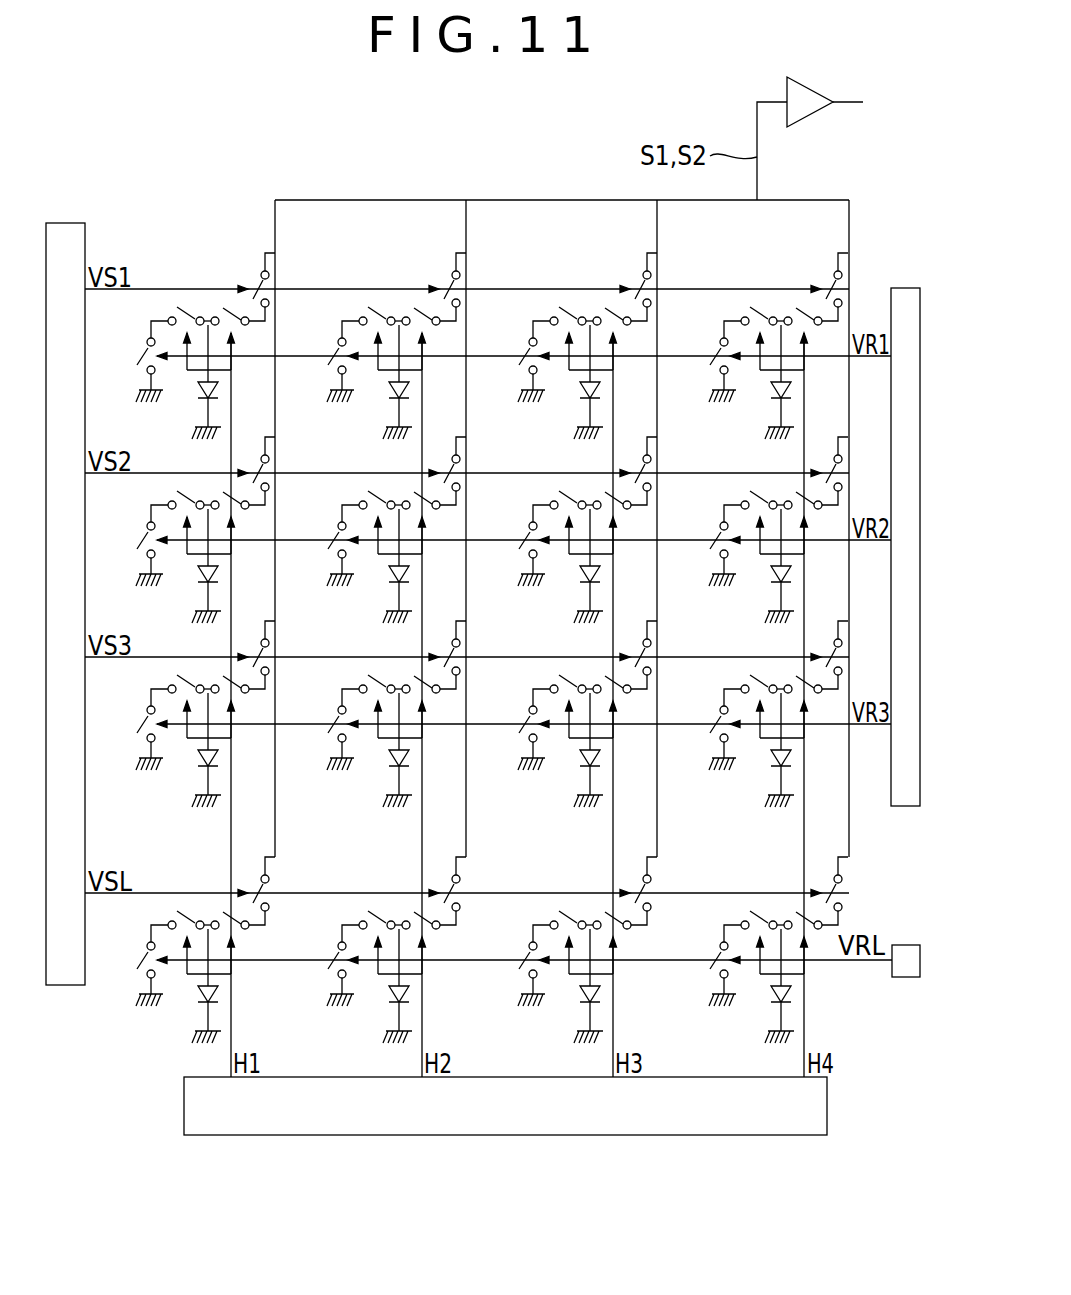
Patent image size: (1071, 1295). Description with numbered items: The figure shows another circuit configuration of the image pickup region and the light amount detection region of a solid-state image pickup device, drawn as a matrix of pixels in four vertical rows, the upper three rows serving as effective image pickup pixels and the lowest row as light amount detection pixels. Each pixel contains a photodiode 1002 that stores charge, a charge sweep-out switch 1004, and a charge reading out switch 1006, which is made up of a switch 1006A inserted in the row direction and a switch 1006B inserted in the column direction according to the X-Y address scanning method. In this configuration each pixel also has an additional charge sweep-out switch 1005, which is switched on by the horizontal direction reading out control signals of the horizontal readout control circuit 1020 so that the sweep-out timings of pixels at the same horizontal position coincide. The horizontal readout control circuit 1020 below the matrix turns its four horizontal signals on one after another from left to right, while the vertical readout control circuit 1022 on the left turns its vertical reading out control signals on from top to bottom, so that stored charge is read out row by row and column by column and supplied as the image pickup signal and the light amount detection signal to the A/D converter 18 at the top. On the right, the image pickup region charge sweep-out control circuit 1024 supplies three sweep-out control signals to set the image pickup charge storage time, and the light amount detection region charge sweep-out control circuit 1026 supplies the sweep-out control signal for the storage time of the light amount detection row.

The A/D converter 18 is at (818, 88).
The photodiode 1002 is at (196, 990).
The charge sweep-out switch 1004 is at (139, 352).
The charge sweep-out switch 1005 is at (172, 306).
The charge reading out switch 1006 is at (303, 170).
The switch 1006A is at (226, 308).
The switch 1006B is at (254, 272).
The horizontal readout control circuit 1020 is at (793, 1138).
The vertical readout control circuit 1022 is at (65, 987).
The image pickup region charge sweep-out control circuit 1024 is at (896, 808).
The light amount detection region charge sweep-out control circuit 1026 is at (906, 979).